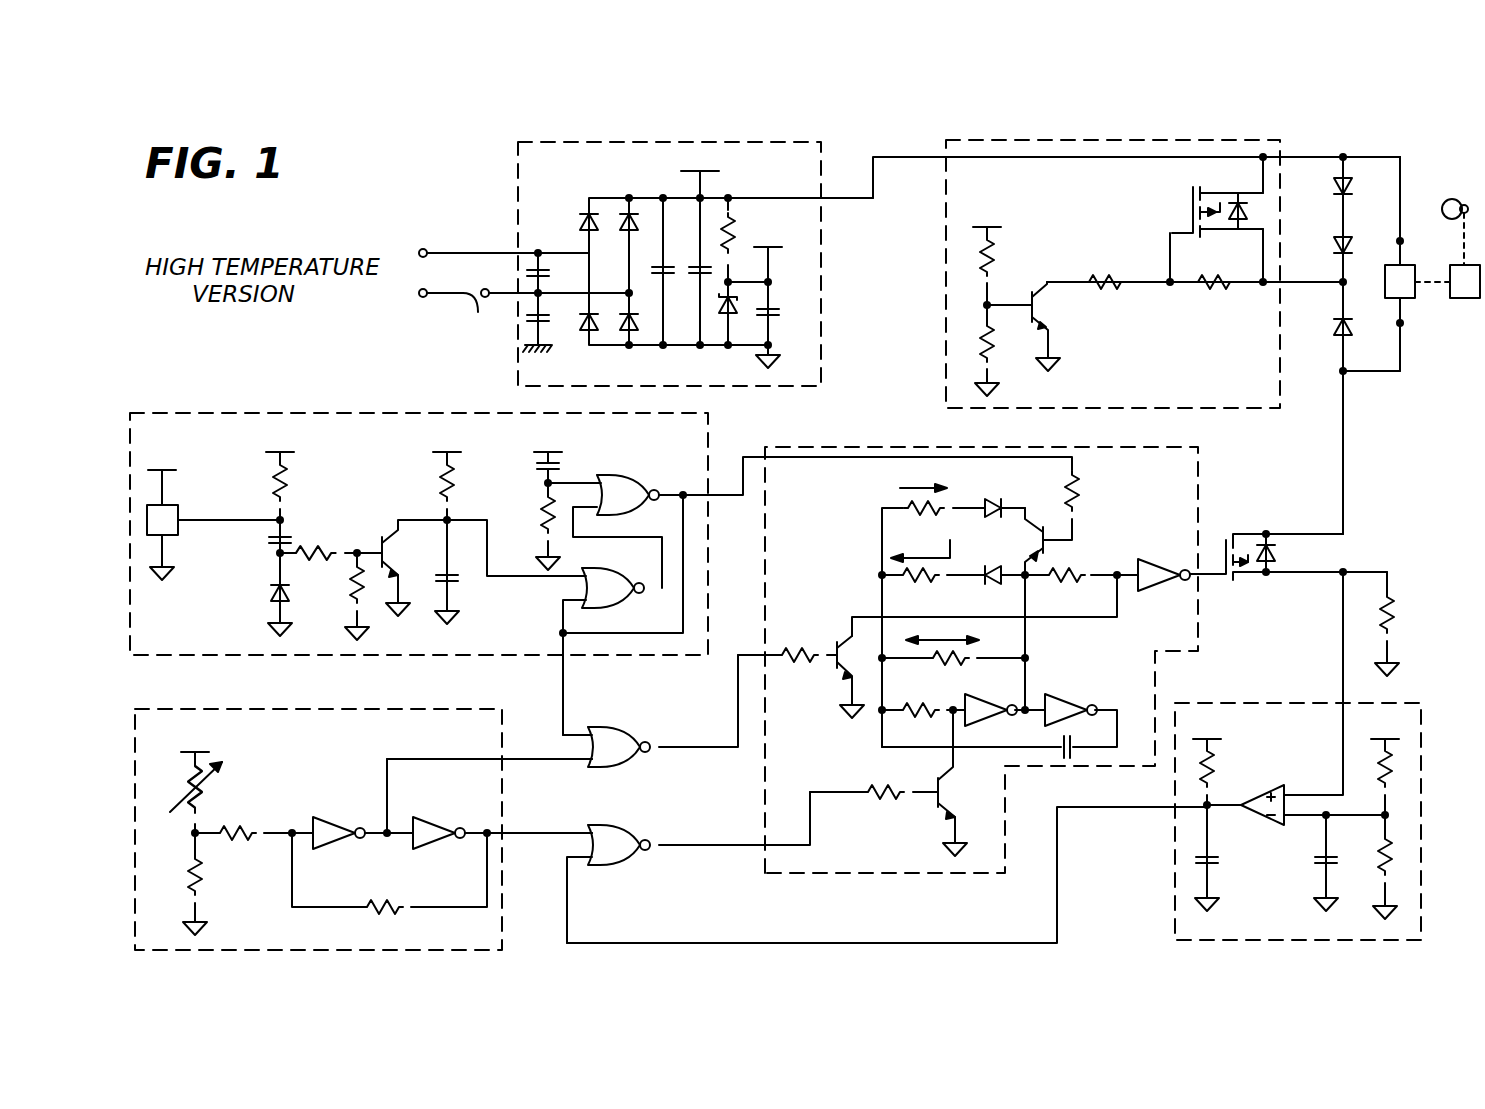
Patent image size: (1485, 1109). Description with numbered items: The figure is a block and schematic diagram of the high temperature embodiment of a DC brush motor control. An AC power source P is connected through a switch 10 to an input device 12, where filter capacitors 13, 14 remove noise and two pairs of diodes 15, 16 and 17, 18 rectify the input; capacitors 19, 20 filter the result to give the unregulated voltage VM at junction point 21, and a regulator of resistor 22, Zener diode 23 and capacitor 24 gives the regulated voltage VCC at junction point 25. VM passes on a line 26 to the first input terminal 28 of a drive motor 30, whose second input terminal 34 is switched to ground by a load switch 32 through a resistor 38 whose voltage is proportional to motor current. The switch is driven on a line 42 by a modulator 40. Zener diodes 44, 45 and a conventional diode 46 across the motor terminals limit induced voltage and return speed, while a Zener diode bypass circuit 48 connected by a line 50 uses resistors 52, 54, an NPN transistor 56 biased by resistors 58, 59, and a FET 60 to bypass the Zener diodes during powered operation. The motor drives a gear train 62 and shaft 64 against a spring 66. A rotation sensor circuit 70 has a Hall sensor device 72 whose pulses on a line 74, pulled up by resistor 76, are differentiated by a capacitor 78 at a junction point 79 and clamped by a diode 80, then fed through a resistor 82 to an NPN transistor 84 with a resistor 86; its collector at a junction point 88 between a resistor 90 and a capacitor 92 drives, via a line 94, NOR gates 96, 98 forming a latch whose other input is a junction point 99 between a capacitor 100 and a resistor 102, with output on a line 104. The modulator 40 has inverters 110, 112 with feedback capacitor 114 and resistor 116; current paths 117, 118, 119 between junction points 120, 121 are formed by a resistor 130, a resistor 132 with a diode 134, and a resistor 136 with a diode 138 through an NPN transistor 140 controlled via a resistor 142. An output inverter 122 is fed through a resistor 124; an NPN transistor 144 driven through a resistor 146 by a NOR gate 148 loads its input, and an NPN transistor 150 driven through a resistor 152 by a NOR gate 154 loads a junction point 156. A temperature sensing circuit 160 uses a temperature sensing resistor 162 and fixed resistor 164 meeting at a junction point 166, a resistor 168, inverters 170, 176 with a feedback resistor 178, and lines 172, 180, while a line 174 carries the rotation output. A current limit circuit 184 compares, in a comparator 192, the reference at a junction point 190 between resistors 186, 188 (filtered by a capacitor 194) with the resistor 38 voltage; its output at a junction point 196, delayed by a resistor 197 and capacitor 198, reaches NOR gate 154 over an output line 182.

The switch 10 is at (470, 325).
The input device 12 is at (760, 142).
The filter capacitor 13 is at (532, 270).
The filter capacitor 14 is at (524, 335).
The diode 15 is at (580, 212).
The diode 16 is at (624, 232).
The diode 17 is at (582, 316).
The diode 18 is at (638, 307).
The capacitor 19 is at (667, 262).
The capacitor 20 is at (697, 280).
The junction point 21 is at (705, 196).
The resistor 22 is at (738, 240).
The Zener diode 23 is at (736, 306).
The capacitor 24 is at (774, 330).
The junction point 25 is at (772, 270).
The line 26 is at (878, 152).
The first input terminal 28 is at (1396, 241).
The drive motor 30 is at (1385, 290).
The load switch 32 is at (1237, 512).
The second input terminal 34 is at (1395, 323).
The resistor 38 is at (1395, 605).
The modulator 40 is at (970, 447).
The line 42 is at (1210, 580).
The Zener diode 44 is at (1333, 179).
The Zener diode 45 is at (1333, 240).
The conventional diode 46 is at (1333, 320).
The Zener diode bypass circuit 48 is at (1235, 140).
The line 50 is at (1318, 282).
The resistor 52 is at (1228, 290).
The resistor 54 is at (1112, 290).
The NPN transistor 56 is at (1050, 305).
The resistor 58 is at (993, 262).
The resistor 59 is at (993, 330).
The FET 60 is at (1180, 203).
The gear train 62 is at (1478, 300).
The shaft 64 is at (1458, 250).
The spring 66 is at (1452, 175).
The rotation sensor circuit 70 is at (405, 413).
The Hall sensor device 72 is at (178, 515).
The line 74 is at (250, 520).
The resistor 76 is at (288, 485).
The capacitor 78 is at (286, 535).
The junction point 79 is at (272, 556).
The diode 80 is at (272, 600).
The resistor 82 is at (318, 560).
The NPN transistor 84 is at (404, 549).
The resistor 86 is at (350, 600).
The junction point 88 is at (440, 520).
The resistor 90 is at (455, 485).
The capacitor 92 is at (455, 590).
The line 94 is at (525, 570).
The NOR gate 96 is at (625, 605).
The NOR gate 98 is at (650, 475).
The junction point 99 is at (542, 480).
The capacitor 100 is at (560, 462).
The resistor 102 is at (540, 510).
The line 104 is at (735, 495).
The inverter 110 is at (985, 700).
The inverter 112 is at (1065, 700).
The capacitor 114 is at (1055, 745).
The resistor 116 is at (930, 718).
The first current path 117 is at (950, 635).
The second current path 118 is at (921, 542).
The third current path 119 is at (901, 479).
The junction point 120 is at (1030, 708).
The junction point 121 is at (878, 716).
The output inverter 122 is at (1130, 565).
The resistor 124 is at (1082, 583).
The resistor 130 is at (960, 668).
The resistor 132 is at (935, 583).
The diode 134 is at (985, 583).
The resistor 136 is at (950, 500).
The diode 138 is at (1003, 500).
The NPN transistor 140 is at (1025, 536).
The resistor 142 is at (1080, 495).
The NPN transistor 144 is at (825, 632).
The resistor 146 is at (800, 663).
The NOR gate 148 is at (628, 727).
The NPN transistor 150 is at (930, 815).
The resistor 152 is at (880, 780).
The NOR gate 154 is at (628, 825).
The junction point 156 is at (945, 745).
The temperature sensing circuit 160 is at (432, 709).
The temperature sensing resistor 162 is at (205, 802).
The fixed resistor 164 is at (200, 895).
The junction point 166 is at (188, 836).
The resistor 168 is at (248, 840).
The inverter 170 is at (328, 815).
The line 172 is at (398, 758).
The line 174 is at (568, 700).
The inverter 176 is at (430, 815).
The feedback resistor 178 is at (385, 900).
The line 180 is at (522, 840).
The output line 182 is at (903, 940).
The current limit circuit 184 is at (1380, 703).
The resistor 186 is at (1393, 765).
The resistor 188 is at (1393, 860).
The junction point 190 is at (1392, 812).
The comparator 192 is at (1278, 783).
The capacitor 194 is at (1330, 868).
The junction point 196 is at (1200, 805).
The resistor 197 is at (1213, 770).
The capacitor 198 is at (1215, 865).